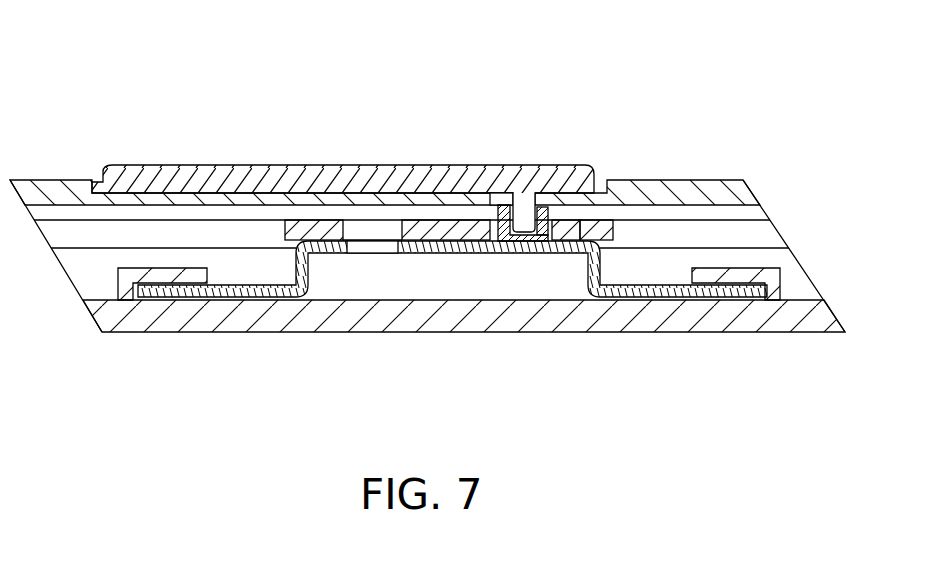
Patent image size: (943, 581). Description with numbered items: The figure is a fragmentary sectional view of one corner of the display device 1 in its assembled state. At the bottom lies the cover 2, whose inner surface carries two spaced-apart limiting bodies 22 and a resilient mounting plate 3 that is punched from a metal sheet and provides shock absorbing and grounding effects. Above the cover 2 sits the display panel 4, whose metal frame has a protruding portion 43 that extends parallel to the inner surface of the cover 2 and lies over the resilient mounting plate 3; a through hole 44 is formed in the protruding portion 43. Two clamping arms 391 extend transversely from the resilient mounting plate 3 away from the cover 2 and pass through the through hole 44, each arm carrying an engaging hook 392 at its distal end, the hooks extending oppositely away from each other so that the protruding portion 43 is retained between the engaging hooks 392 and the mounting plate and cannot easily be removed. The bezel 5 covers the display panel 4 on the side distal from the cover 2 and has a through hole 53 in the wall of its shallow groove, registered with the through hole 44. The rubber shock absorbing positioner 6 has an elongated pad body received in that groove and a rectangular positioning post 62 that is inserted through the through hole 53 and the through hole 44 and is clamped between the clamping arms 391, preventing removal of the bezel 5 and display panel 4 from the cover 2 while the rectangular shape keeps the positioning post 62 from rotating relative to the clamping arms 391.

The display device 1 is at (93, 118).
The cover 2 is at (430, 333).
The limiting body 22 is at (175, 280).
The resilient mounting plate 3 is at (246, 285).
The clamping arm 391 is at (545, 250).
The engaging hook 392 is at (546, 206).
The display panel 4 is at (614, 235).
The protruding portion 43 is at (617, 228).
The through hole 44 is at (495, 228).
The bezel 5 is at (682, 197).
The through hole 53 is at (506, 197).
The shock absorbing positioner 6 is at (314, 173).
The positioning post 62 is at (523, 215).